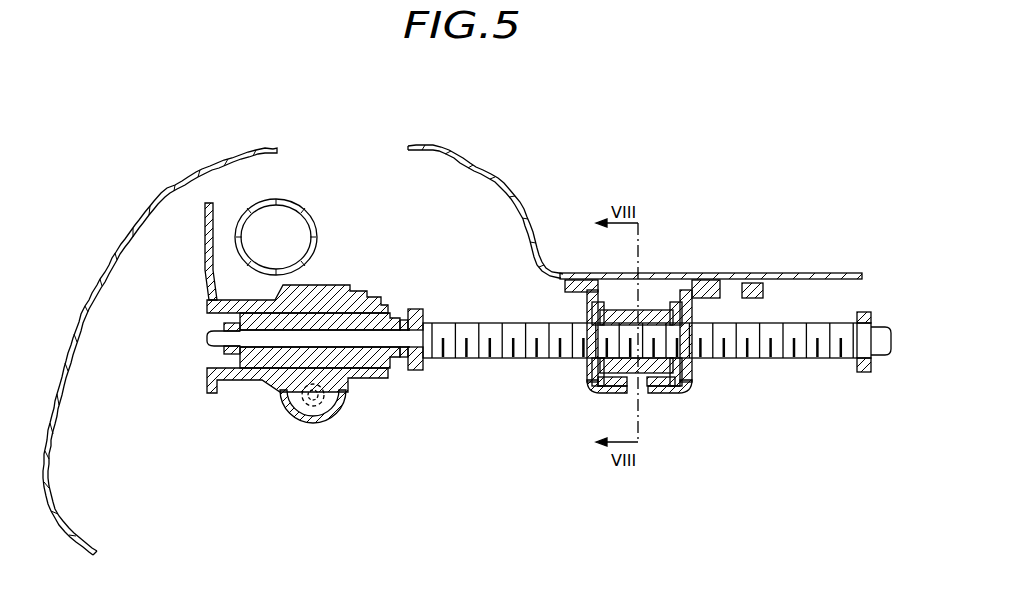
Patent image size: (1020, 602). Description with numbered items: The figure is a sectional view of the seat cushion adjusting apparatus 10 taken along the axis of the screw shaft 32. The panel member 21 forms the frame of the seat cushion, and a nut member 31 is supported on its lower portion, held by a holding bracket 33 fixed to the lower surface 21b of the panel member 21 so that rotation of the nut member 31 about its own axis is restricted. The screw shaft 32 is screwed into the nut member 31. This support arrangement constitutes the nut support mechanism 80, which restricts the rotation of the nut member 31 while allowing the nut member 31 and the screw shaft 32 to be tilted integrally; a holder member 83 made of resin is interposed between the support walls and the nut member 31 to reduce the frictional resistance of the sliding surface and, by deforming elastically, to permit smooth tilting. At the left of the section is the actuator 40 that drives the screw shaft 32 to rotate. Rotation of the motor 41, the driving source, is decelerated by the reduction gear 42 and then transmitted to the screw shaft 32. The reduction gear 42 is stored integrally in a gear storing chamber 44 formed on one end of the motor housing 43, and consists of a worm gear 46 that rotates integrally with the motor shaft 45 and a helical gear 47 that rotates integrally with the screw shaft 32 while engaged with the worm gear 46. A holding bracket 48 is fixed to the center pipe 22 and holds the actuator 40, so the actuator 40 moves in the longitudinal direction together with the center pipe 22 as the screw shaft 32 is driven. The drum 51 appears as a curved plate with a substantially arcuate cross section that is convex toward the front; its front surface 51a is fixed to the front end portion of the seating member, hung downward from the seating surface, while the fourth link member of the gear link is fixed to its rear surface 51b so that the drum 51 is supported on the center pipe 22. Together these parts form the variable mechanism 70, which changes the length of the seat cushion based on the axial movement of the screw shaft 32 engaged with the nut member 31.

The seat cushion adjusting apparatus 10 is at (150, 104).
The panel member 21 is at (408, 146).
The lower surface 21b is at (828, 288).
The center pipe 22 is at (300, 200).
The nut member 31 is at (654, 308).
The screw shaft 32 is at (783, 360).
The holding bracket 33 is at (690, 388).
The actuator 40 is at (197, 396).
The motor 41 is at (353, 286).
The reduction gear 42 is at (316, 341).
The motor housing 43 is at (323, 316).
The gear storing chamber 44 is at (320, 412).
The motor shaft 45 is at (283, 414).
The worm gear 46 is at (345, 410).
The helical gear 47 is at (322, 290).
The holding bracket 48 is at (206, 280).
The drum 51 is at (274, 148).
The front surface 51a is at (163, 191).
The rear surface 51b is at (86, 540).
The variable mechanism 70 is at (212, 328).
The nut support mechanism 80 is at (629, 342).
The holder member 83 is at (648, 395).